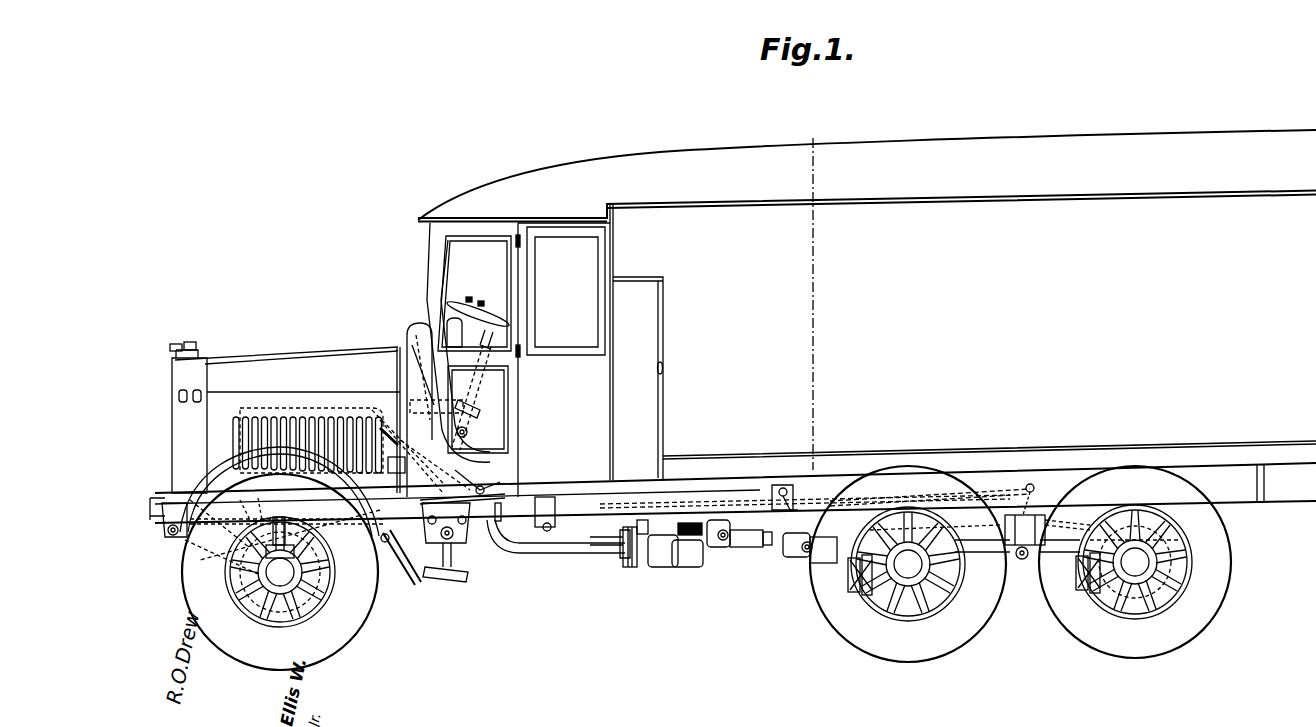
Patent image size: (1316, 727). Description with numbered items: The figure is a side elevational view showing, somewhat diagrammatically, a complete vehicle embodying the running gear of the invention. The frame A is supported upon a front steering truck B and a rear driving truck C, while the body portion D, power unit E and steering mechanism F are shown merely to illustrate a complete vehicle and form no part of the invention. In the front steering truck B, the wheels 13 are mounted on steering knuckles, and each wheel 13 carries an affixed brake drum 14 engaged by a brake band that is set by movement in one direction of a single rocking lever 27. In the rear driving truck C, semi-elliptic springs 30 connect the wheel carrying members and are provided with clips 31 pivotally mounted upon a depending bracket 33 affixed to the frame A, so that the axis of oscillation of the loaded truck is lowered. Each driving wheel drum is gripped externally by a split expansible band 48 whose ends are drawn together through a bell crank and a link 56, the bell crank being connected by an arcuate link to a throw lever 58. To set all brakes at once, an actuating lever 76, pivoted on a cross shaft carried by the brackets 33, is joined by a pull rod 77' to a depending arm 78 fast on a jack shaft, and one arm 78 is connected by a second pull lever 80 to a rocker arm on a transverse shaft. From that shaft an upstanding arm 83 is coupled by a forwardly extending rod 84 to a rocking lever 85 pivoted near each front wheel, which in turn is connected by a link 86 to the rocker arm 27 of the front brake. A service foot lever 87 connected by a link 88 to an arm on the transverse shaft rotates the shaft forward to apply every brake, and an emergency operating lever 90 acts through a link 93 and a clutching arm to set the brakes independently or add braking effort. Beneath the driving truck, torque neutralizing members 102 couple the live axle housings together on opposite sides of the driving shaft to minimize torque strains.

The frame A is at (735, 326).
The front steering truck B is at (300, 537).
The rear driving truck C is at (1149, 562).
The body portion D is at (491, 360).
The power unit E is at (285, 412).
The steering mechanism F is at (505, 326).
The wheels 13 is at (337, 642).
The brake drum 14 is at (235, 587).
The rocking lever 27 is at (302, 530).
The springs 30 is at (983, 524).
The clips 31 is at (1000, 573).
The depending bracket 33 is at (1055, 515).
The split expansible band 48 is at (1193, 597).
The link 56 is at (852, 573).
The throw lever 58 is at (1197, 540).
The actuating lever 76 is at (1027, 503).
The pull rods 77' is at (930, 493).
The depending arms 78 is at (792, 510).
The second pull lever 80 is at (731, 508).
The upstanding arm 83 is at (565, 540).
The forwardly extending rods 84 is at (493, 537).
The rocking lever 85 is at (245, 550).
The link 86 is at (262, 508).
The service foot lever 87 is at (467, 431).
The link 88 is at (497, 486).
The emergency operating lever 90 is at (410, 335).
The link 93 is at (505, 493).
The torque neutralizing members 102 is at (1025, 573).